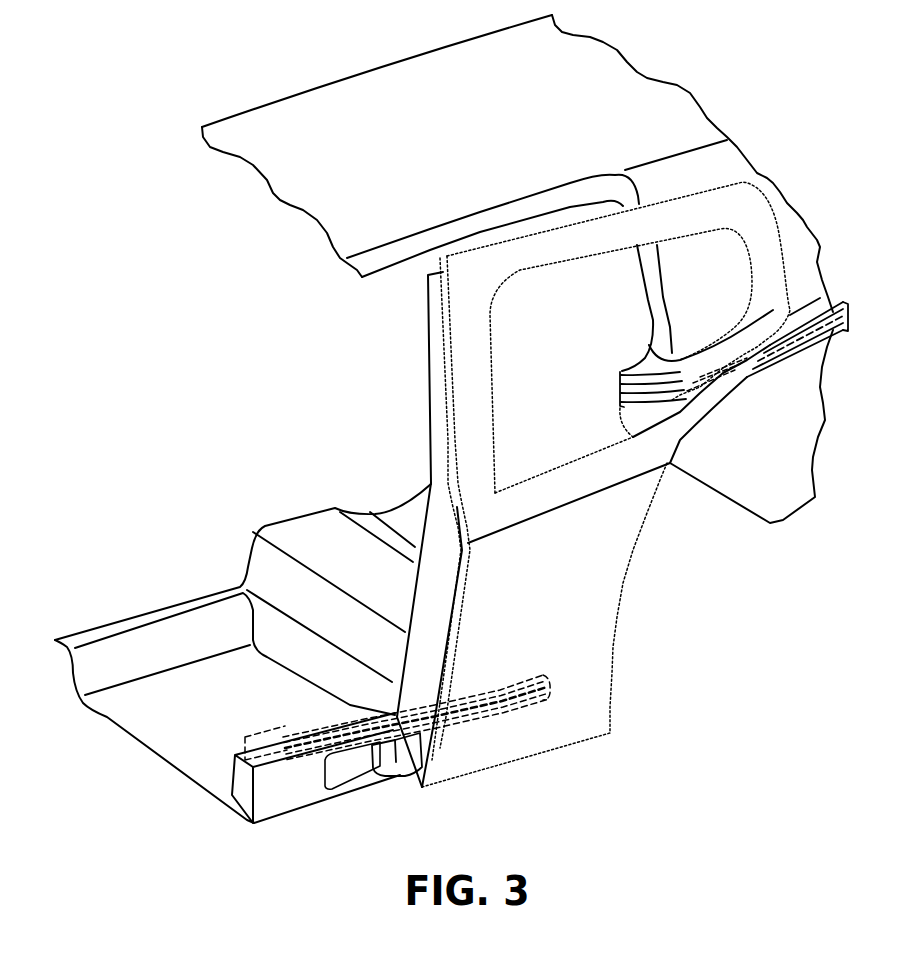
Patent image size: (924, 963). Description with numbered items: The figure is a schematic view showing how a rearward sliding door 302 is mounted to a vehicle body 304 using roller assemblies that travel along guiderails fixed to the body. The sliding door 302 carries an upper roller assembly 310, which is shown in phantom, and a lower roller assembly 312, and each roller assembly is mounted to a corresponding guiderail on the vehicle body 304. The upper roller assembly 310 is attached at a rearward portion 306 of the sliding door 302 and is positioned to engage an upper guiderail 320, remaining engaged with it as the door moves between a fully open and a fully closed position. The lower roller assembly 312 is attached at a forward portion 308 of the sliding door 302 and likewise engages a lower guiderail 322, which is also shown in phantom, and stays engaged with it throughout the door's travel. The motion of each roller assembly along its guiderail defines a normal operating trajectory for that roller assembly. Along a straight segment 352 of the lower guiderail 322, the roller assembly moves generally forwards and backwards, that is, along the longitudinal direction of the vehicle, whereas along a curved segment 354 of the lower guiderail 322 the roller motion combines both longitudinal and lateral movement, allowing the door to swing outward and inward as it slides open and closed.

The sliding door 302 is at (550, 730).
The vehicle body 304 is at (342, 103).
The rearward portion 306 is at (787, 263).
The forward portion 308 is at (440, 528).
The upper roller assembly 310 is at (713, 403).
The lower roller assembly 312 is at (405, 765).
The upper guiderail 320 is at (833, 347).
The lower guiderail 322 is at (278, 727).
The straight segment 352 is at (490, 720).
The curved segment 354 is at (373, 722).